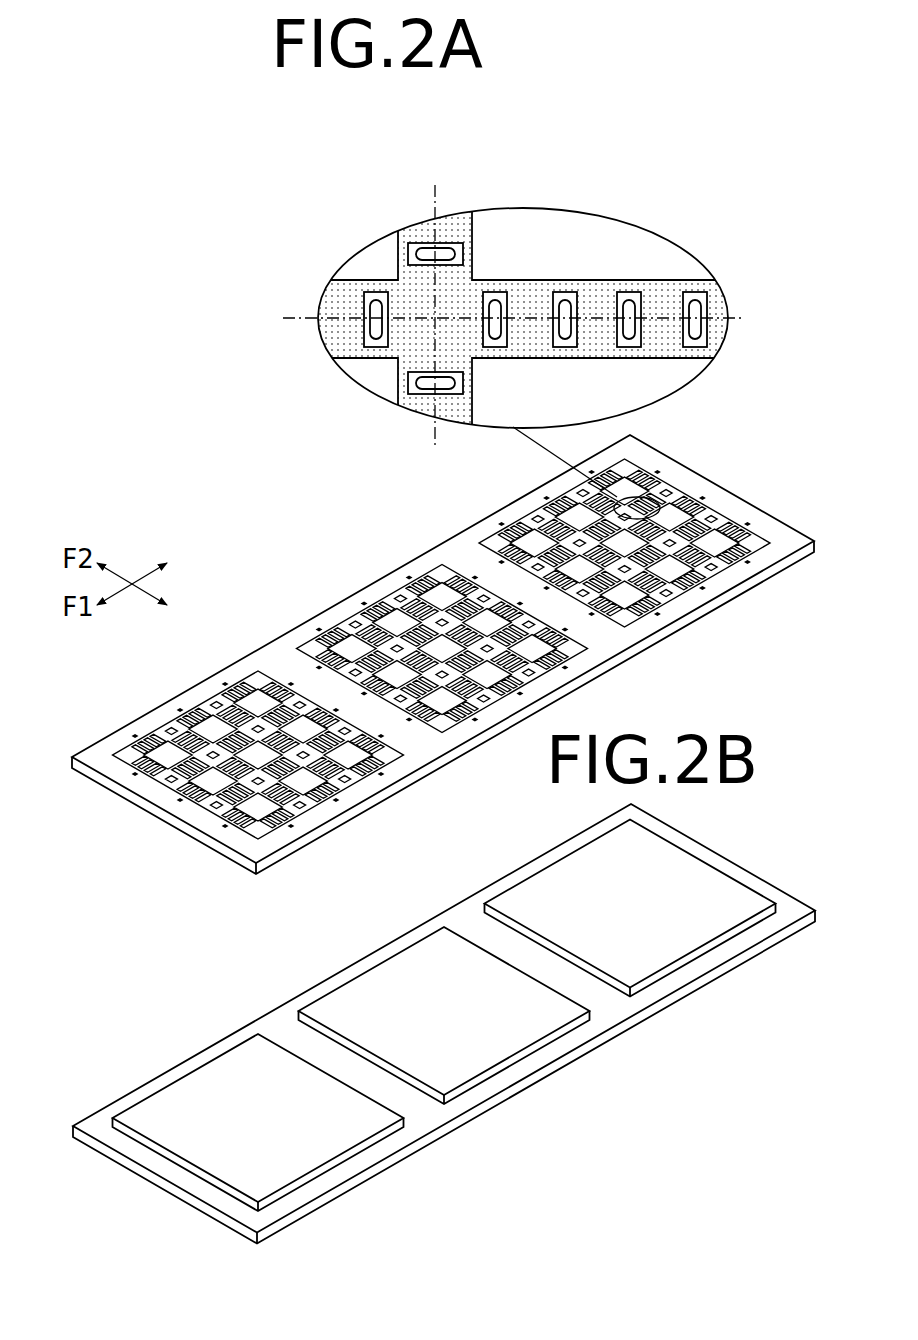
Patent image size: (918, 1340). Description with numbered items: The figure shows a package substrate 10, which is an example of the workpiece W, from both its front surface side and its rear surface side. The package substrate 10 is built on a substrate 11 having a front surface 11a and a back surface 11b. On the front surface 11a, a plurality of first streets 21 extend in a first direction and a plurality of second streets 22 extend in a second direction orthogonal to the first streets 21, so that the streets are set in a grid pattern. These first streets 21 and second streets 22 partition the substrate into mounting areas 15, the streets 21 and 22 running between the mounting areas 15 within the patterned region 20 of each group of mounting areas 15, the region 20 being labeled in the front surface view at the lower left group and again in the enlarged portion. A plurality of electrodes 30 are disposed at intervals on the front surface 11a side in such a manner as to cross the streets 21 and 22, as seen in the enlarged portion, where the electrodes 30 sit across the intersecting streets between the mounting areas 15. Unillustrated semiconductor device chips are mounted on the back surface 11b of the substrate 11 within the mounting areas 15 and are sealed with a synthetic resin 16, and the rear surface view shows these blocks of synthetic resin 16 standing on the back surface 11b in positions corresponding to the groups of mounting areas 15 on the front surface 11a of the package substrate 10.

In FIG. 2A, the package substrate 10 is at (443, 654).
In FIG. 2B, the package substrate 10 is at (444, 1024).
In FIG. 2A, the substrate 11 is at (443, 654).
In FIG. 2B, the substrate 11 is at (444, 1024).
In FIG. 2A, the front surface 11a is at (298, 640).
In FIG. 2B, the back surface 11b is at (292, 1010).
In FIG. 2A, the mounting area 15 is at (558, 232).
In FIG. 2B, the synthetic resin 16 is at (686, 940).
In FIG. 2A, the frame region 20 is at (452, 237).
In FIG. 2A, the first street 21 is at (316, 317).
In FIG. 2A, the second street 22 is at (433, 207).
In FIG. 2A, the electrode 30 is at (712, 300).
In FIG. 2A, the workpiece W is at (247, 436).